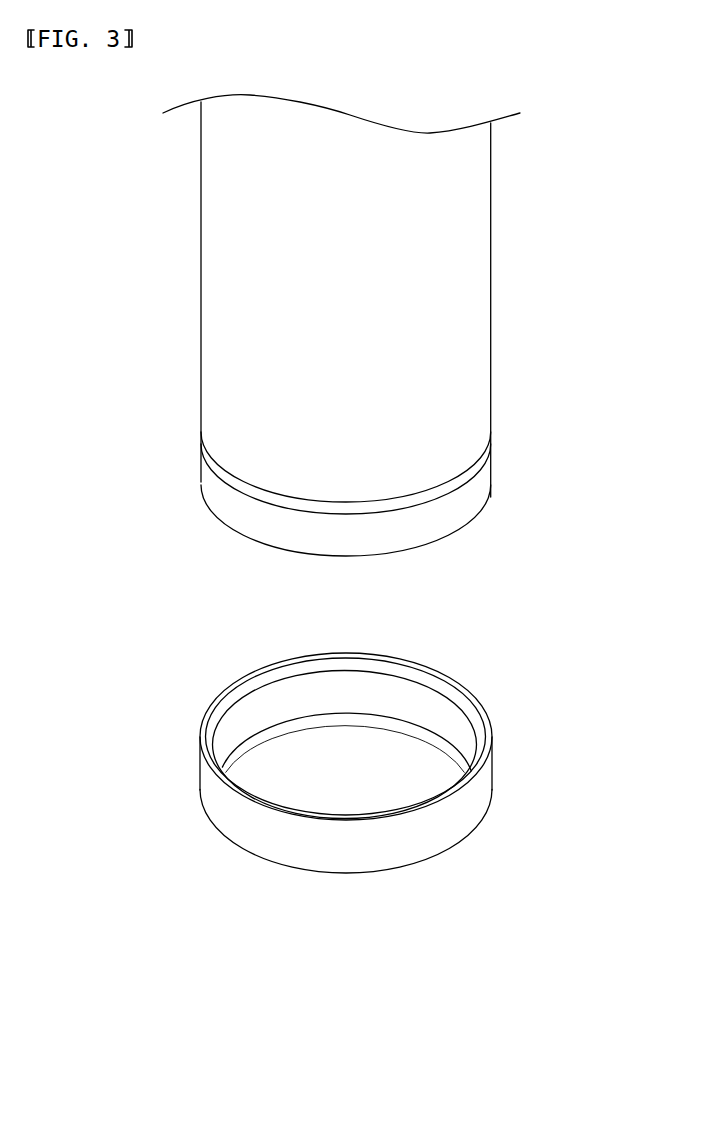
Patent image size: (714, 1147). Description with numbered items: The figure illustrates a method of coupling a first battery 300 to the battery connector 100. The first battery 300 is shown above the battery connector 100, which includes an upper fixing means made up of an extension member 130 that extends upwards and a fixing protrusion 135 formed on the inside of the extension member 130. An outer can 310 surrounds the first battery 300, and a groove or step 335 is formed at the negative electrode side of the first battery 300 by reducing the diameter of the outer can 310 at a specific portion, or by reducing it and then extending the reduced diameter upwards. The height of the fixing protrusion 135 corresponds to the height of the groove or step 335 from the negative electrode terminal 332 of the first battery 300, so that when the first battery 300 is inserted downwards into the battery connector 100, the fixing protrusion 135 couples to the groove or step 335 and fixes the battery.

The battery connector 100 is at (363, 795).
The extension member 130 is at (267, 712).
The fixing protrusion 135 is at (472, 706).
The first battery 300 is at (452, 210).
The outer can 310 is at (201, 325).
The negative electrode terminal 332 is at (460, 523).
The groove or step 335 is at (433, 492).